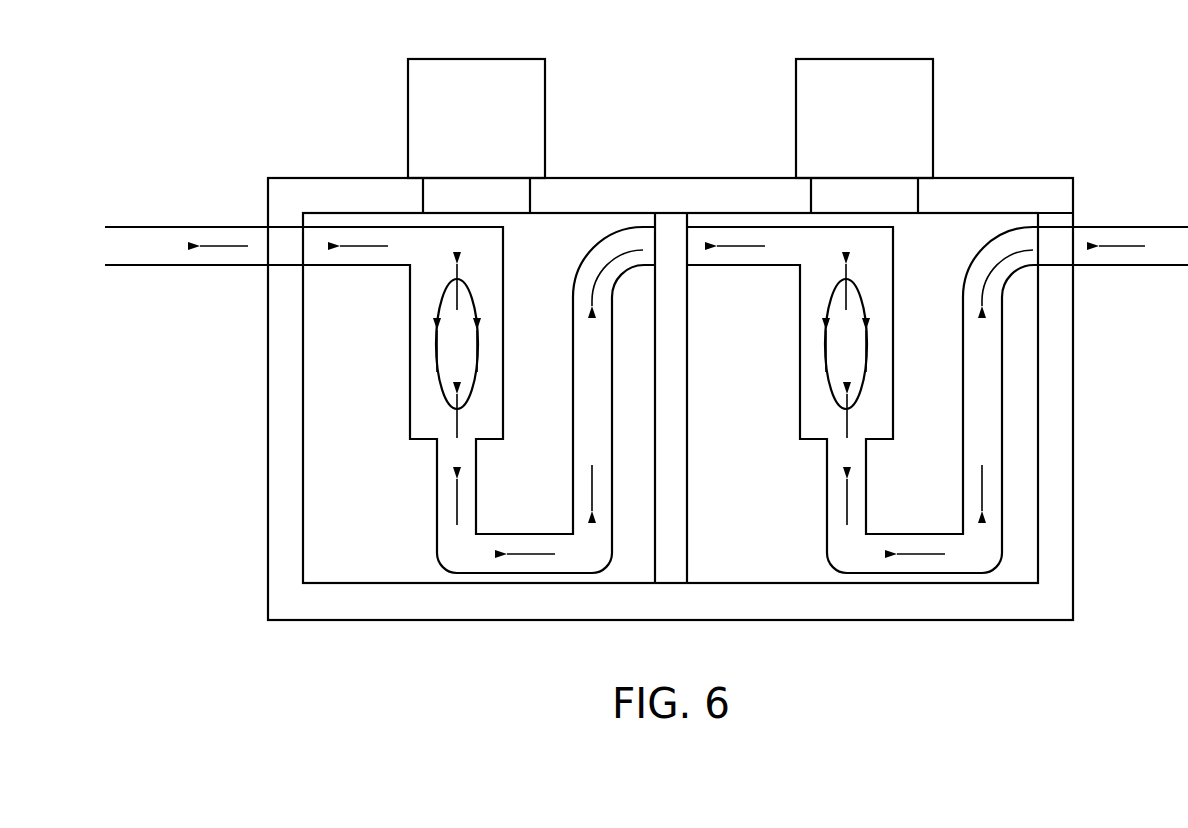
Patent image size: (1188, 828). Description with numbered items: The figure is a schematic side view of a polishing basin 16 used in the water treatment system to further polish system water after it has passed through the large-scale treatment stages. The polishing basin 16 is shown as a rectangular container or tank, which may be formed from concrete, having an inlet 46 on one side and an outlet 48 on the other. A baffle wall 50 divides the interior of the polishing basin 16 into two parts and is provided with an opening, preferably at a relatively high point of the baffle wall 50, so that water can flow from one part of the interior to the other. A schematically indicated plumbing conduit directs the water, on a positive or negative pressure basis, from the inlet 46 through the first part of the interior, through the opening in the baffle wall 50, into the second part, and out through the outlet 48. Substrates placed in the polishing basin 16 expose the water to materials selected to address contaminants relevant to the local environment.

The polishing basin 16 is at (1028, 167).
The inlet 46 is at (1067, 258).
The outlet 48 is at (273, 259).
The baffle wall 50 is at (682, 552).